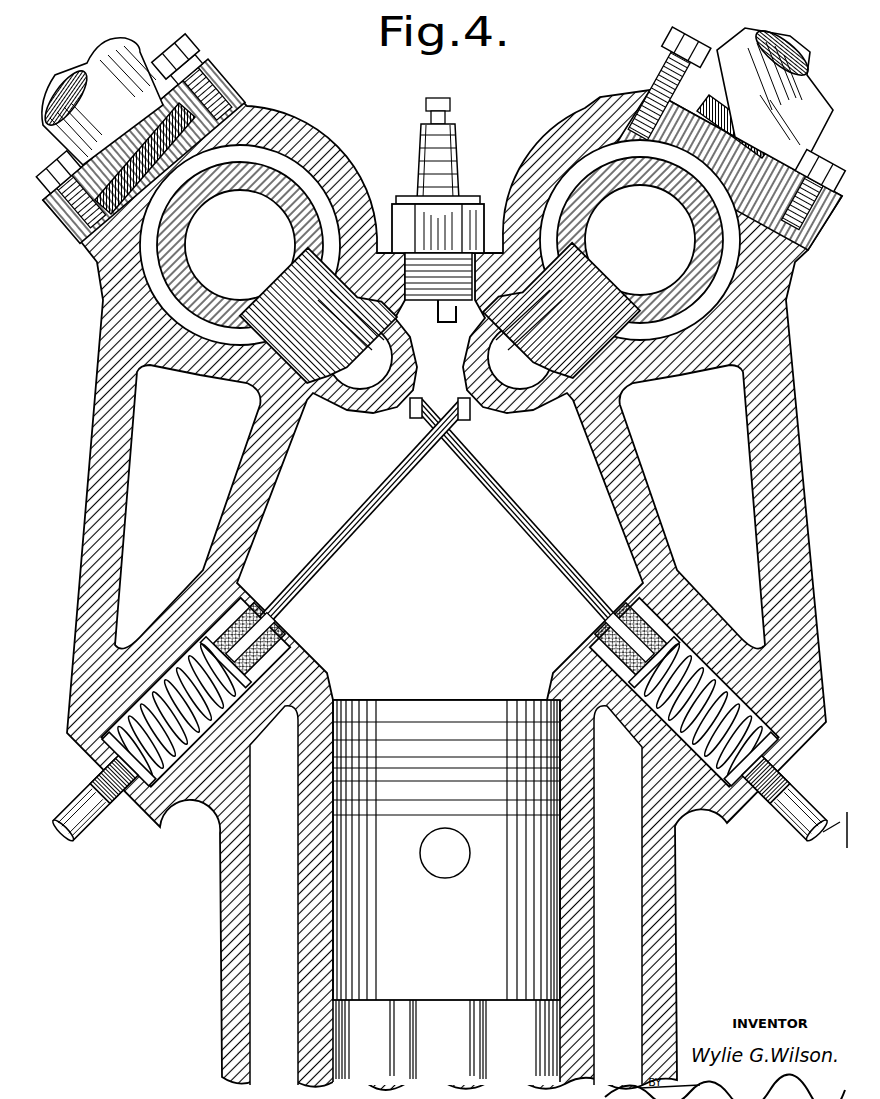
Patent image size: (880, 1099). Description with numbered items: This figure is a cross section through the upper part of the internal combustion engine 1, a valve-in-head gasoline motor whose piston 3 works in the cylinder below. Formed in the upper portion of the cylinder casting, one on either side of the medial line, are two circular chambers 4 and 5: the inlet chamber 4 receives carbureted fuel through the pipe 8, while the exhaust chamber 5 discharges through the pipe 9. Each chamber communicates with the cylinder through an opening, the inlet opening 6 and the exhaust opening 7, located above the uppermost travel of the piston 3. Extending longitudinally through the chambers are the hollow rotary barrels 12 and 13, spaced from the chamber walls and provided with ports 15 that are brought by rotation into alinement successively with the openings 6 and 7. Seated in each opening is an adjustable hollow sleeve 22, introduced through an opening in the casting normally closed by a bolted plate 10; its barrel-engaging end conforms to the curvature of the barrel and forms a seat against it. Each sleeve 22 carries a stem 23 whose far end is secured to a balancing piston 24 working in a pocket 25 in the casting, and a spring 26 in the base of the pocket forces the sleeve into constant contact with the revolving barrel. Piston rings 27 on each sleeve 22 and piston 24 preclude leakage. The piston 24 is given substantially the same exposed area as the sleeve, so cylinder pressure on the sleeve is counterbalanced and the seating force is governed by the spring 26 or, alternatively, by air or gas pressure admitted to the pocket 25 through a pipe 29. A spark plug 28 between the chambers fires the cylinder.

The internal combustion engine 1 is at (672, 957).
The piston 3 is at (835, 852).
The inlet chamber 4 is at (300, 166).
The exhaust chamber 5 is at (598, 150).
The inlet opening 6 is at (260, 403).
The exhaust opening 7 is at (582, 402).
The fuel pipe 8 is at (121, 66).
The exhaust pipe 9 is at (752, 42).
The closure plate 10 is at (192, 57).
The inlet rotary barrel 12 is at (265, 143).
The exhaust rotary barrel 13 is at (715, 255).
The barrel port 15 is at (205, 295).
The adjustable sleeve 22 is at (352, 363).
The stem 23 is at (360, 532).
The balancing piston 24 is at (290, 638).
The pocket 25 is at (163, 670).
The spring 26 is at (163, 777).
The piston ring 27 is at (330, 308).
The spark plug 28 is at (445, 210).
The pressure pipe 29 is at (87, 830).